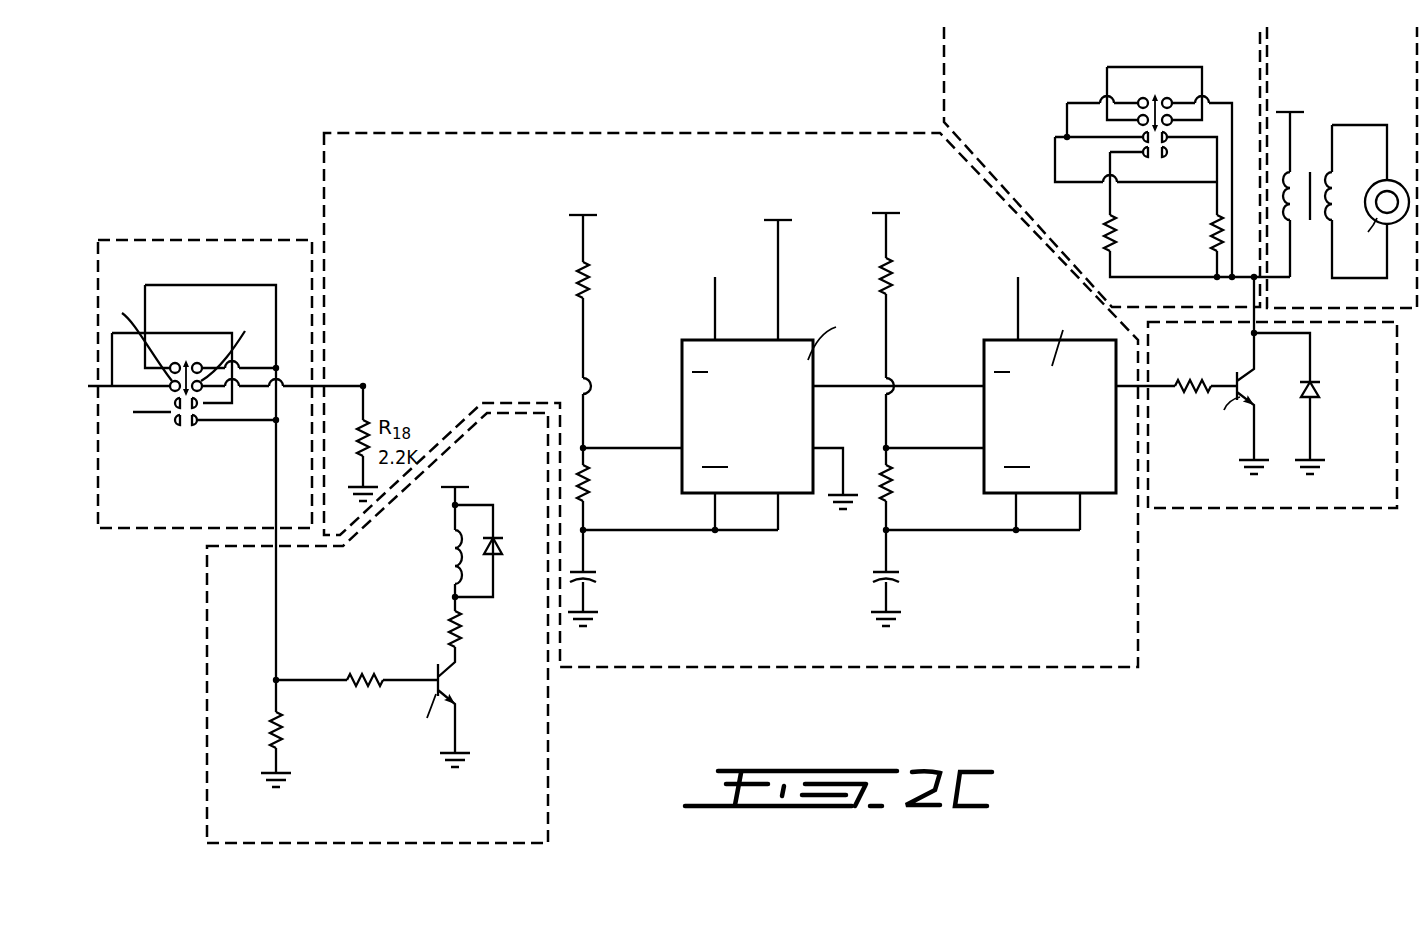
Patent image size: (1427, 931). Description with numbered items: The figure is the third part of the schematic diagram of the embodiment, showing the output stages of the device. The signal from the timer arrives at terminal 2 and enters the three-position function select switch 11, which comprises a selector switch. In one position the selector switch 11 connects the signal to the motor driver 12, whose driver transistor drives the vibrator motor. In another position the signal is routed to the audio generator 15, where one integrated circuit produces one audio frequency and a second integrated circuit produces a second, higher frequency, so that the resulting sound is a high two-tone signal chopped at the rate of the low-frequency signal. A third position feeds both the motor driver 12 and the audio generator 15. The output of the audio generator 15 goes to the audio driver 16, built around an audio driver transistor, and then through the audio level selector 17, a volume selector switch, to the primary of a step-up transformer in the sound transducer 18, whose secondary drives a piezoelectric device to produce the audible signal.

The connector terminal 2 is at (114, 386).
The function select switch 11 is at (176, 535).
The motor driver 12 is at (203, 749).
The audio generator 15 is at (536, 126).
The audio driver 16 is at (1230, 517).
The audio level selector 17 is at (940, 92).
The sound transducer 18 is at (1405, 316).